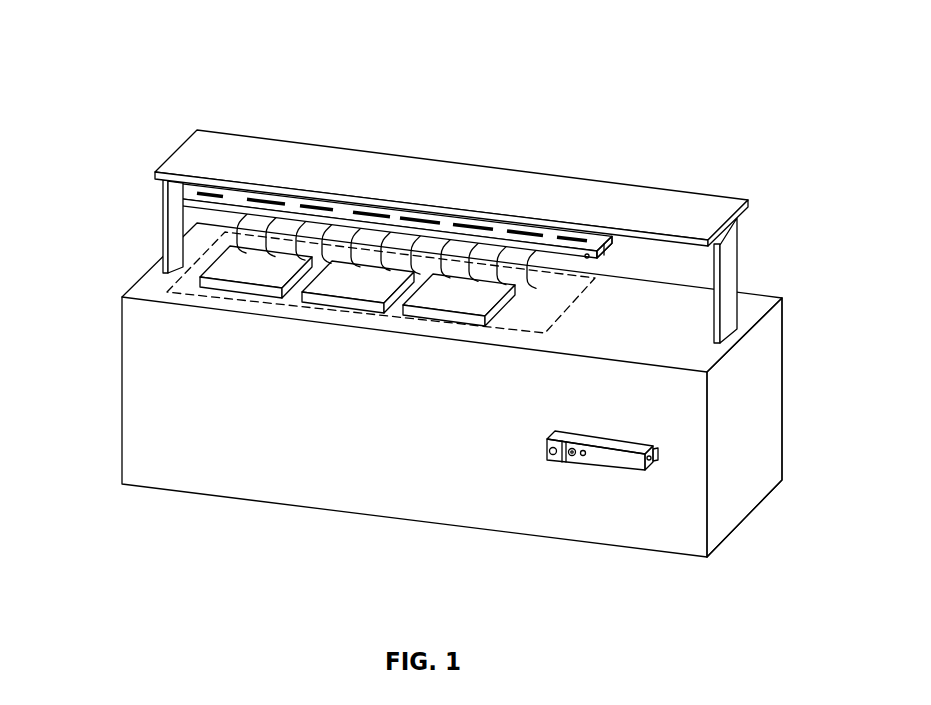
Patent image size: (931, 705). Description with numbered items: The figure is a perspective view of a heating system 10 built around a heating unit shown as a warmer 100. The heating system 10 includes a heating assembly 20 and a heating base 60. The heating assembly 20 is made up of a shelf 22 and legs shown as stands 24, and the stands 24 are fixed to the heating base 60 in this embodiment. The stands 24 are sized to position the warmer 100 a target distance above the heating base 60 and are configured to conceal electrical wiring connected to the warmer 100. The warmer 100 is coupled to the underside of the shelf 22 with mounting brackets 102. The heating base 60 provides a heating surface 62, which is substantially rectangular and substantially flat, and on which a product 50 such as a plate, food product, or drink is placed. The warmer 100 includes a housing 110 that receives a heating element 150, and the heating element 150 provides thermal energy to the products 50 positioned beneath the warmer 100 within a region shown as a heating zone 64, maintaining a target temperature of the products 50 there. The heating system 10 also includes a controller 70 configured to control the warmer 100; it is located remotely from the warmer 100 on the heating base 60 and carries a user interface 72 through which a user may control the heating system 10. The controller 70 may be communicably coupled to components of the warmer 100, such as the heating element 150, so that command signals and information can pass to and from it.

The heating system 10 is at (121, 40).
The heating assembly 20 is at (427, 159).
The shelf 22 is at (212, 143).
The stands 24 is at (167, 225).
The product 50 is at (250, 291).
The heating base 60 is at (112, 328).
The heating surface 62 is at (705, 353).
The heating zone 64 is at (523, 326).
The controller 70 is at (602, 486).
The user interface 72 is at (600, 455).
The warmer 100 is at (645, 252).
The mounting brackets 102 is at (606, 238).
The housing 110 is at (563, 253).
The heating element 150 is at (345, 216).